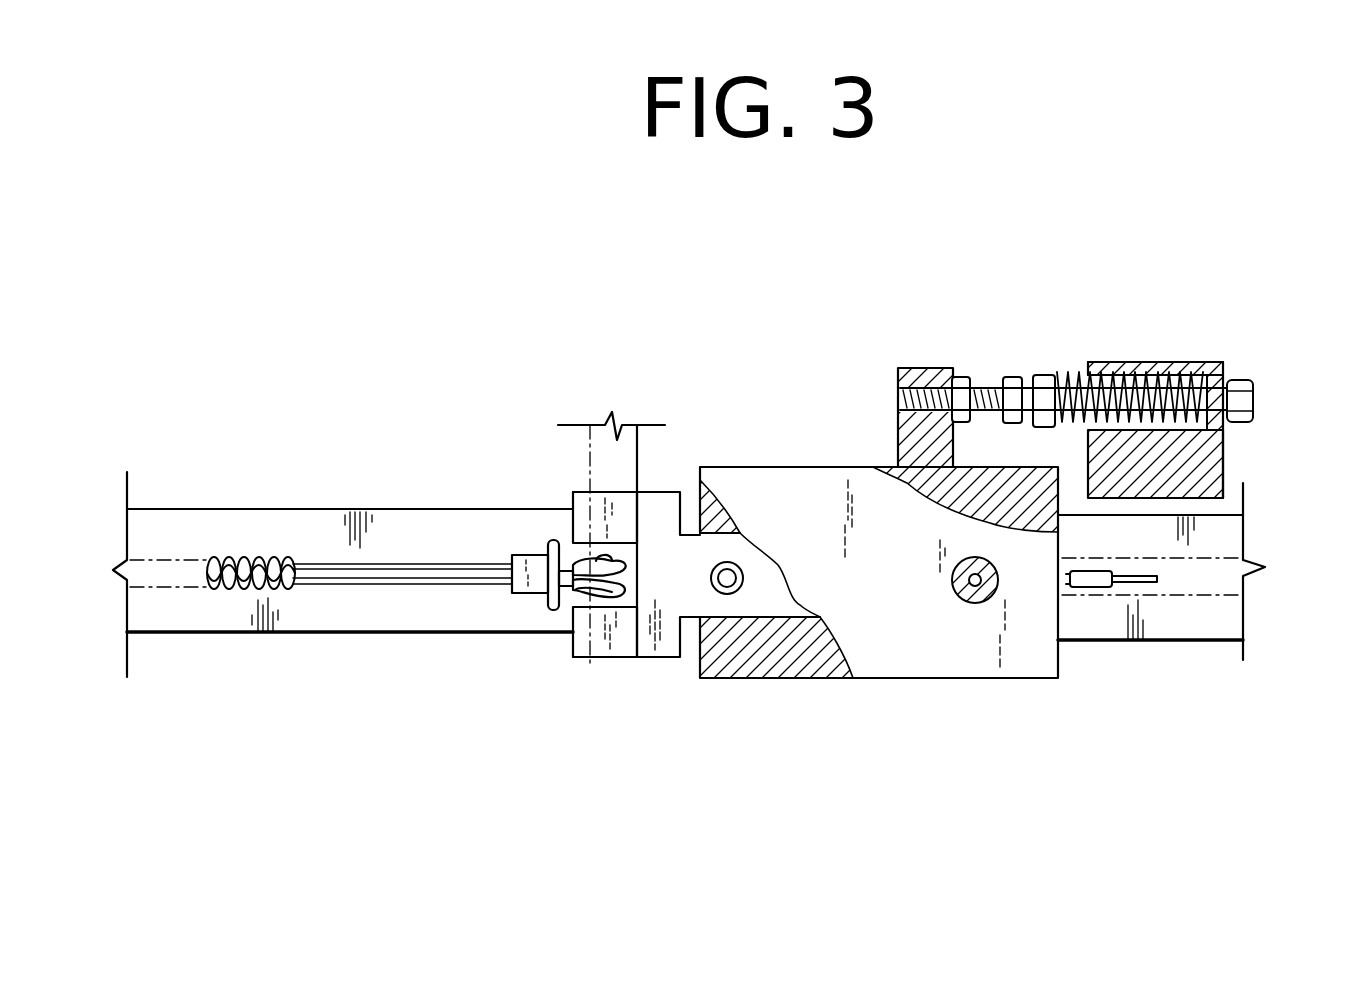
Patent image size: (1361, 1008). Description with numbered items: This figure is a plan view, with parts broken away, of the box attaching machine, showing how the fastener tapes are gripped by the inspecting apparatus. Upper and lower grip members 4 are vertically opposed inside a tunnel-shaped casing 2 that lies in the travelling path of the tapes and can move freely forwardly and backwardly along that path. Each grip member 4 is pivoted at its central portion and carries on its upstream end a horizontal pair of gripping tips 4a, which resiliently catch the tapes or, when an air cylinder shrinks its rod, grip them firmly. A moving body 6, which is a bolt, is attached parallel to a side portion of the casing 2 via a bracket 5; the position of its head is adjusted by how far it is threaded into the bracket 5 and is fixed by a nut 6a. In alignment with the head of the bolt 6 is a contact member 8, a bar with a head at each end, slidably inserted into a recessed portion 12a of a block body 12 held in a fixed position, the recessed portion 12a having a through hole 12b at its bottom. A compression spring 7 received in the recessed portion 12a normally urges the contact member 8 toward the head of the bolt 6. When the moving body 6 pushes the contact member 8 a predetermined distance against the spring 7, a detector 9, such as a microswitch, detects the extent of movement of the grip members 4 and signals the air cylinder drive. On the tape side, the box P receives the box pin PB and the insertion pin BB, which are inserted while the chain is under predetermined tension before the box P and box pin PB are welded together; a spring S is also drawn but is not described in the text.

The casing 2 is at (760, 490).
The grip member 4 is at (653, 600).
The gripping tip 4a is at (605, 500).
The bracket 5 is at (900, 420).
The moving body 6 is at (1015, 377).
The nut 6a is at (960, 377).
The compression spring 7 is at (1130, 375).
The contact member 8 is at (1043, 375).
The detector 9 is at (1093, 593).
The block body 12 is at (1224, 400).
The recessed portion 12a is at (1175, 433).
The through hole 12b is at (1227, 372).
The return spring S is at (330, 563).
The box P is at (518, 586).
The box pin PB is at (578, 565).
The insertion pin BB is at (565, 598).